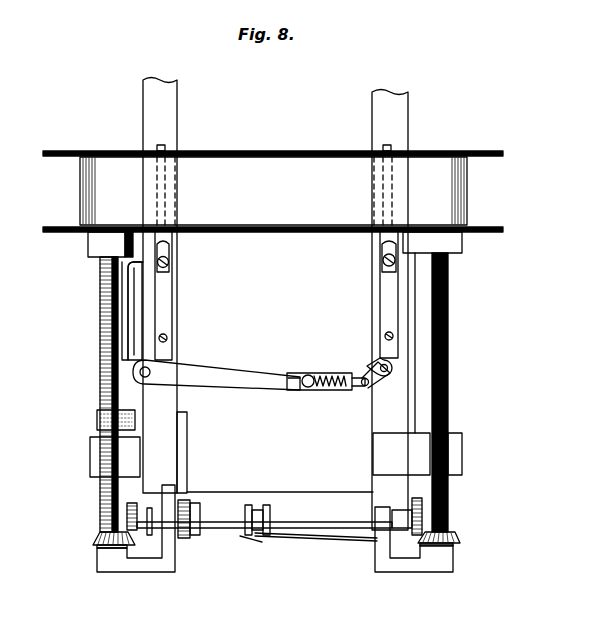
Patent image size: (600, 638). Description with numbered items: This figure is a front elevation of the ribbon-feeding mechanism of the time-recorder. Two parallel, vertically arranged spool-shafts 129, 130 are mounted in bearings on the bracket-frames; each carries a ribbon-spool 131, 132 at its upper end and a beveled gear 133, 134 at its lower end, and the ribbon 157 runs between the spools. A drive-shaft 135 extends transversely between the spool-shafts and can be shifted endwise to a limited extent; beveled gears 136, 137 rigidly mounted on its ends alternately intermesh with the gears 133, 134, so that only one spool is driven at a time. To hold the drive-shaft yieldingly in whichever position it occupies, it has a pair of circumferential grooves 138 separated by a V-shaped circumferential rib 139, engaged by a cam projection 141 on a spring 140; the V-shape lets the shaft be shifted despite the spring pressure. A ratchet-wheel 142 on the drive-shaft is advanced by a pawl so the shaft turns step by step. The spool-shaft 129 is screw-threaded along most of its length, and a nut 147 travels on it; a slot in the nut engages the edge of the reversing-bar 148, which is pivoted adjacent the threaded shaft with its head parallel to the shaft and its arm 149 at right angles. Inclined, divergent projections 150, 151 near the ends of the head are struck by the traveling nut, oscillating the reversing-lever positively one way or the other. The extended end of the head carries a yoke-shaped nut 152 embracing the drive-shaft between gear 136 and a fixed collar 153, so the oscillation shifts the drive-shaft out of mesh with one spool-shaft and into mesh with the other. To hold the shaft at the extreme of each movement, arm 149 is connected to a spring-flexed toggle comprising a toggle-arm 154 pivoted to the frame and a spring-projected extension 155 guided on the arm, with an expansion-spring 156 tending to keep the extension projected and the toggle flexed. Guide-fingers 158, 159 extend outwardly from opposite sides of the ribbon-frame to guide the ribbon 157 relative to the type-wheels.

The spool-shaft 129 is at (102, 378).
The spool-shaft 130 is at (452, 381).
The ribbon-spool 131 is at (105, 142).
The ribbon-spool 132 is at (466, 150).
The beveled gear 133 is at (90, 542).
The beveled gear 134 is at (461, 538).
The drive-shaft 135 is at (235, 528).
The beveled gear 136 is at (155, 560).
The beveled gear 137 is at (413, 540).
The circumferential grooves 138 is at (252, 507).
The circumferential rib 139 is at (259, 507).
The spring 140 is at (313, 537).
The cam projection 141 is at (263, 538).
The ratchet-wheel 142 is at (193, 540).
The nut 147 is at (97, 423).
The reversing-bar 148 is at (135, 332).
The arm 149 is at (208, 372).
The inclined projection 150 is at (107, 485).
The inclined projection 151 is at (122, 270).
The yoke-shaped nut 152 is at (140, 516).
The fixed collar 153 is at (153, 512).
The toggle-arm 154 is at (367, 365).
The spring-projected extension 155 is at (360, 380).
The expansion-spring 156 is at (327, 390).
The ribbon 157 is at (273, 191).
The guide-finger 158 is at (163, 243).
The guide-finger 159 is at (383, 247).